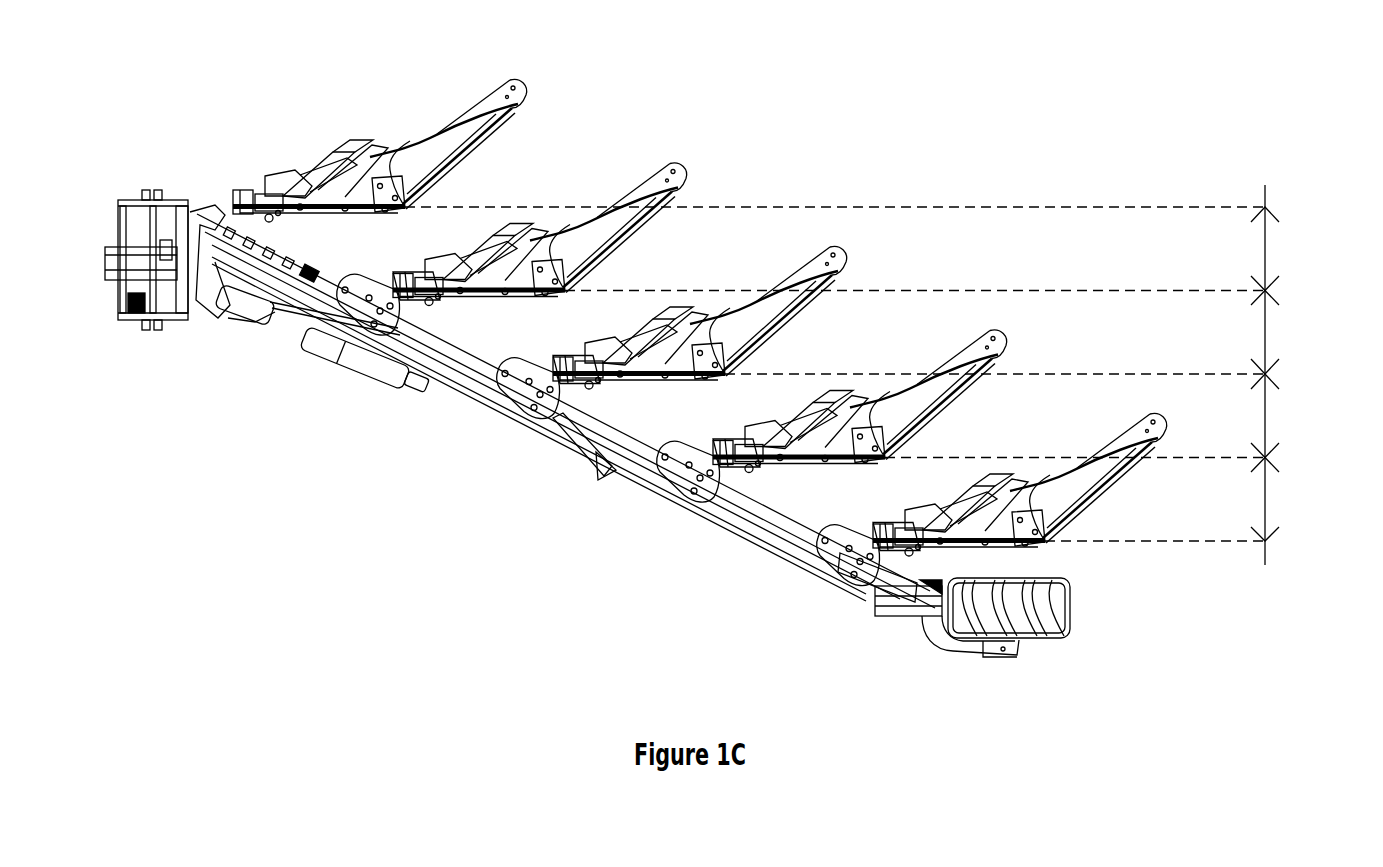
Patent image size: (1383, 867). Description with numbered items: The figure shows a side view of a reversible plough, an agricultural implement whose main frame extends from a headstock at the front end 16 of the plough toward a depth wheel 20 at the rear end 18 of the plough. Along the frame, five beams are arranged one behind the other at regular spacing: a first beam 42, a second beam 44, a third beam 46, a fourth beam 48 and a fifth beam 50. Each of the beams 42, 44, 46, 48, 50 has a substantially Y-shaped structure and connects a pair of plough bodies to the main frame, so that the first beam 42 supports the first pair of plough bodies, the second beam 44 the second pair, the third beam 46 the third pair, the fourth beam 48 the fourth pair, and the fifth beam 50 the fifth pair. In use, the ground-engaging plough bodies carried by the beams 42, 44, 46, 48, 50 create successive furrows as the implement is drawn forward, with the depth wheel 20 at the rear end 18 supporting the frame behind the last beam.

The front end 16 is at (107, 260).
The rear end 18 is at (1312, 375).
The depth wheel 20 is at (1050, 624).
The first beam 42 is at (272, 207).
The second beam 44 is at (540, 234).
The third beam 46 is at (700, 317).
The fourth beam 48 is at (860, 401).
The fifth beam 50 is at (1020, 484).